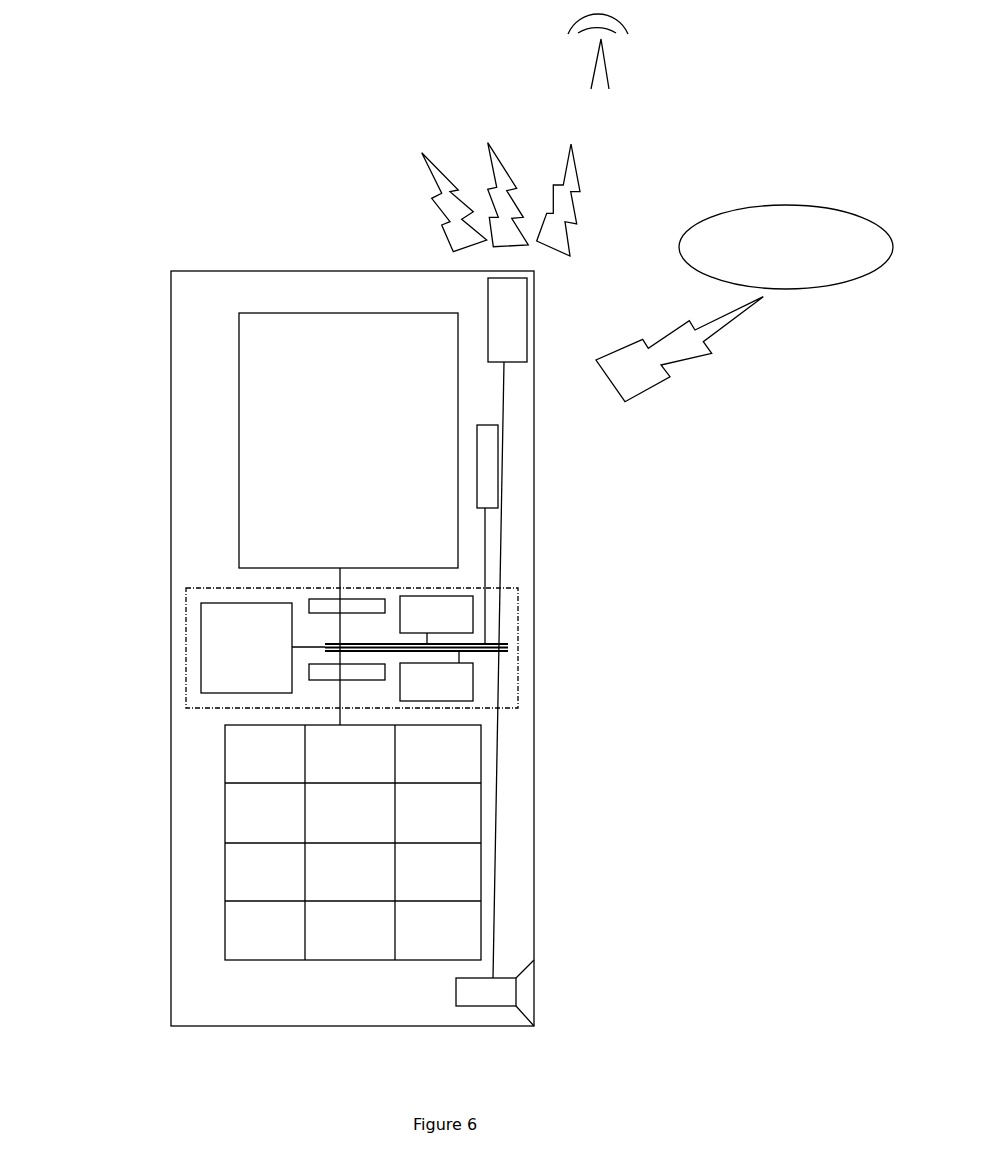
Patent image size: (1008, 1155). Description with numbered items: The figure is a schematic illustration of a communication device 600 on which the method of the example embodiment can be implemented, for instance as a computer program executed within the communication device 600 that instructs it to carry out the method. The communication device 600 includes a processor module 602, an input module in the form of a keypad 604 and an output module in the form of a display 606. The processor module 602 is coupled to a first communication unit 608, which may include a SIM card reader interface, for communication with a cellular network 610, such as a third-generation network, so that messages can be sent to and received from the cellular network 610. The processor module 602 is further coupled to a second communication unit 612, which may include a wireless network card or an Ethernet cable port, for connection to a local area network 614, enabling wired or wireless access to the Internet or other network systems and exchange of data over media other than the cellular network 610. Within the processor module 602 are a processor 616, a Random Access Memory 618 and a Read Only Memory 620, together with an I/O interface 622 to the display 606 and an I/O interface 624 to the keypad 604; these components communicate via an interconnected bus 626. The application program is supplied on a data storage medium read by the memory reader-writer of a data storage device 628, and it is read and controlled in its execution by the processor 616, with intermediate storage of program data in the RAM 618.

The communication device 600 is at (143, 1003).
The processor module 602 is at (520, 618).
The keypad 604 is at (242, 823).
The display 606 is at (295, 340).
The first communication unit 608 is at (507, 354).
The cellular network 610 is at (626, 70).
The second communication unit 612 is at (487, 493).
The local area network 614 is at (789, 282).
The processor 616 is at (240, 642).
The Random Access Memory (RAM) 618 is at (447, 610).
The Read Only Memory (ROM) 620 is at (448, 670).
The I/O interface 622 is at (324, 608).
The I/O interface 624 is at (343, 672).
The interconnected bus 626 is at (503, 647).
The data storage device 628 is at (458, 1005).